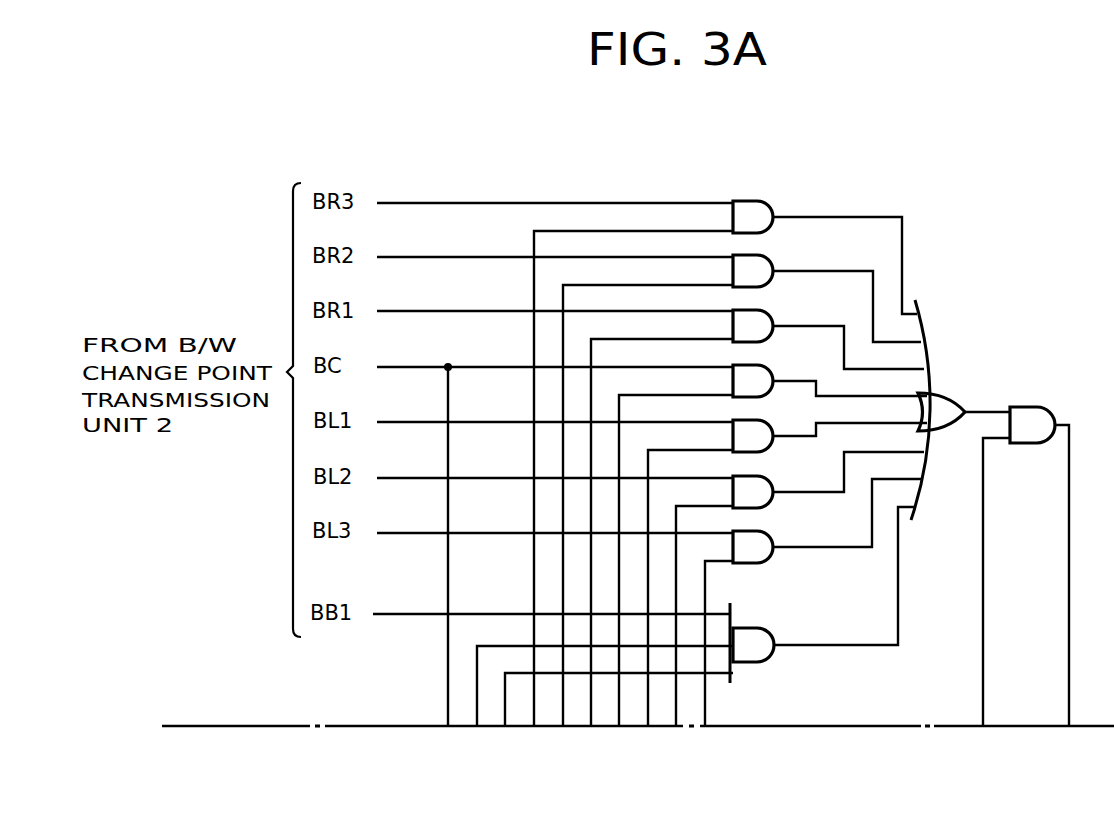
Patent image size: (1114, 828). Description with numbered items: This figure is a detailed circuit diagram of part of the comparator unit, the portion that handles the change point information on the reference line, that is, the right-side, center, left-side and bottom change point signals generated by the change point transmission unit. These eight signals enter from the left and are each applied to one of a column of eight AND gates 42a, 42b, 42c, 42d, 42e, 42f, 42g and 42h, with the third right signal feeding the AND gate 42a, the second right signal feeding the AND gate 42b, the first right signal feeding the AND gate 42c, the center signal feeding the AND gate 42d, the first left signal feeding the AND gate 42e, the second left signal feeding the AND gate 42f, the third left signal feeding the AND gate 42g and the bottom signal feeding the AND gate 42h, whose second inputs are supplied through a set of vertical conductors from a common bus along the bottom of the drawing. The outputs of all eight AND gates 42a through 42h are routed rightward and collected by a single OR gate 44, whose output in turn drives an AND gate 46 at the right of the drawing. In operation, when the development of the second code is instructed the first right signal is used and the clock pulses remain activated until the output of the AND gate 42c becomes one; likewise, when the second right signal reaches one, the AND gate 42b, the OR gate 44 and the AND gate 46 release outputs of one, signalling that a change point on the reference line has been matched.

The AND gate 42a is at (762, 208).
The AND gate 42b is at (762, 270).
The AND gate 42c is at (762, 325).
The AND gate 42d is at (759, 379).
The AND gate 42e is at (759, 432).
The AND gate 42f is at (758, 488).
The AND gate 42g is at (760, 542).
The AND gate 42h is at (758, 640).
The OR gate 44 is at (945, 403).
The AND gate 46 is at (1032, 413).